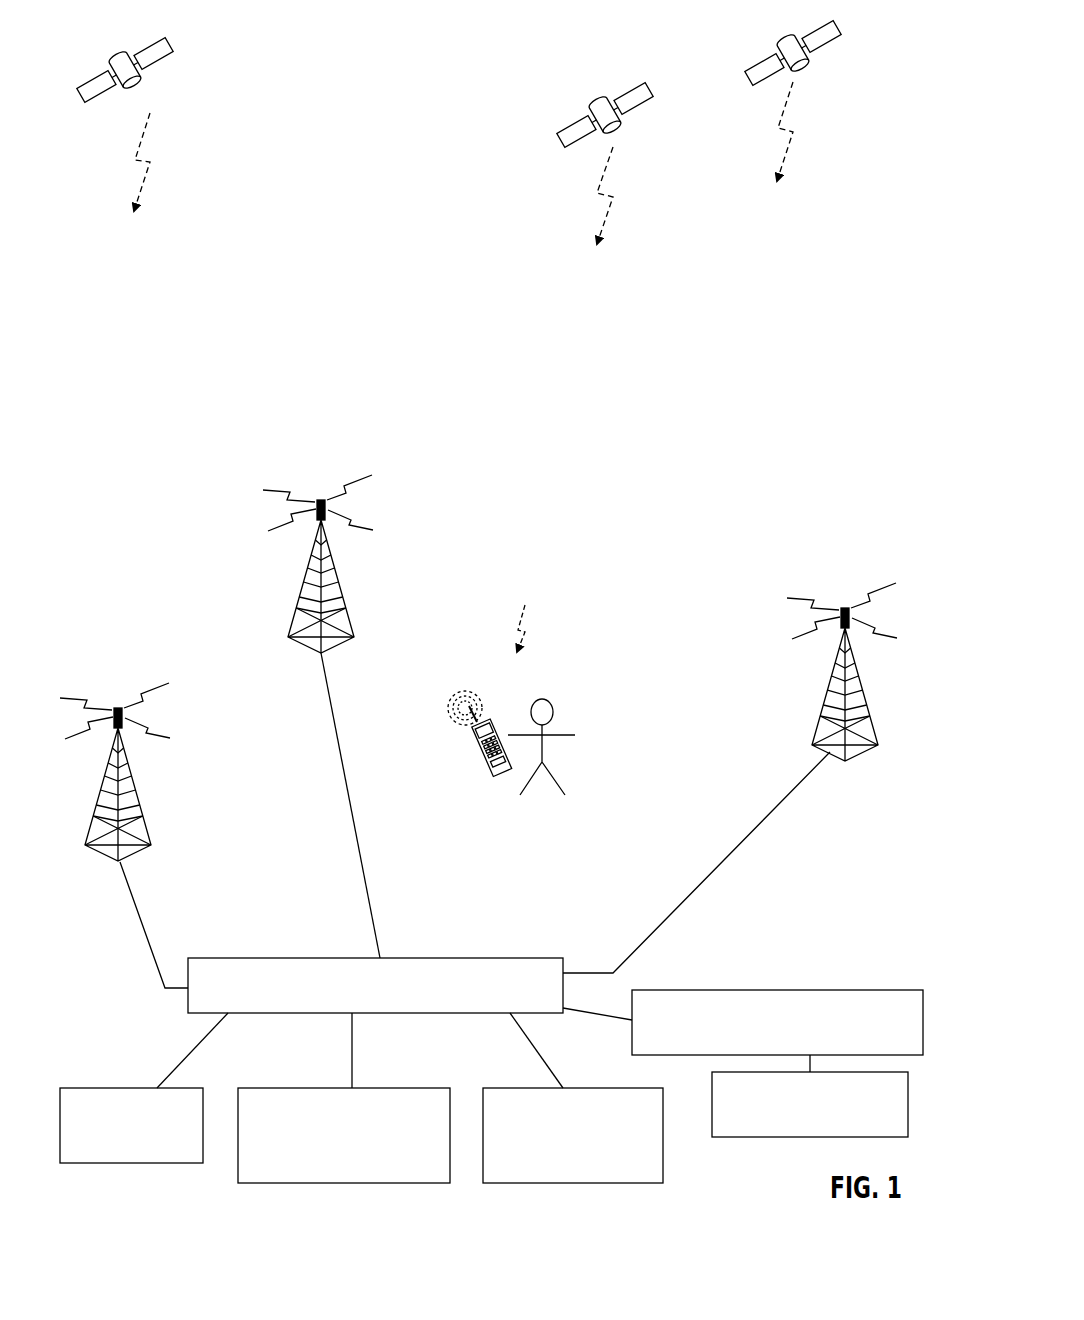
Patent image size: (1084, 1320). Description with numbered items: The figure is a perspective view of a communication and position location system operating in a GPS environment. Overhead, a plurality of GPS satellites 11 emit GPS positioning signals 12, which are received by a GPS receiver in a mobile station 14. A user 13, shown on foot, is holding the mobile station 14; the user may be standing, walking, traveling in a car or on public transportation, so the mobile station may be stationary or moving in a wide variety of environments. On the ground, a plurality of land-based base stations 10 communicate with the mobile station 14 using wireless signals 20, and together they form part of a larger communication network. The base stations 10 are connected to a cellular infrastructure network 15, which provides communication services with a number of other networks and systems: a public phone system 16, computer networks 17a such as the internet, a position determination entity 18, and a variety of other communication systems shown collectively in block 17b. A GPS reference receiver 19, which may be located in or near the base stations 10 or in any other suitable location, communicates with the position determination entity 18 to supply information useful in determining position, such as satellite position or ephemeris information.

The base stations 10 is at (150, 812).
The GPS satellites 11 is at (540, 70).
The GPS positioning signals 12 is at (163, 203).
The user 13 is at (580, 715).
The mobile station 14 is at (467, 743).
The cellular infrastructure network 15 is at (375, 973).
The phone system 16 is at (131, 1113).
The computer networks 17a is at (344, 1123).
The other communication systems 17b is at (570, 1123).
The position determination entity 18 is at (777, 1010).
The GPS reference receiver 19 is at (797, 1104).
The wireless signals 20 is at (143, 688).